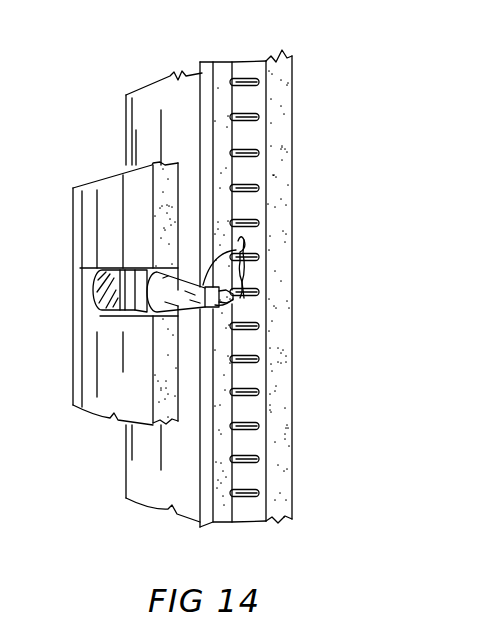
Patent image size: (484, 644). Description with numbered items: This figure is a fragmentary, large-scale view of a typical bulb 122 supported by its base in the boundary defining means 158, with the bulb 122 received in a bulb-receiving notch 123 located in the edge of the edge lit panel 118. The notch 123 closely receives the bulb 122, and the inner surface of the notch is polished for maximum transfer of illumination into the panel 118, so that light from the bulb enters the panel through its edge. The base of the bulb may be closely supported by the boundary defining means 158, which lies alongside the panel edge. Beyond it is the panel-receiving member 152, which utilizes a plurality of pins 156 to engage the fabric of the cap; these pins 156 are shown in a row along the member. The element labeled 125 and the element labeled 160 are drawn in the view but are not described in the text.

The edge lit panel 118 is at (110, 408).
The bulb 122 is at (152, 267).
The bulb-receiving notch 123 is at (103, 313).
The fastener head 125 is at (105, 292).
The panel-receiving member 152 is at (289, 148).
The pins 156 is at (262, 428).
The boundary defining means 158 is at (212, 62).
The wire tie 160 is at (243, 248).